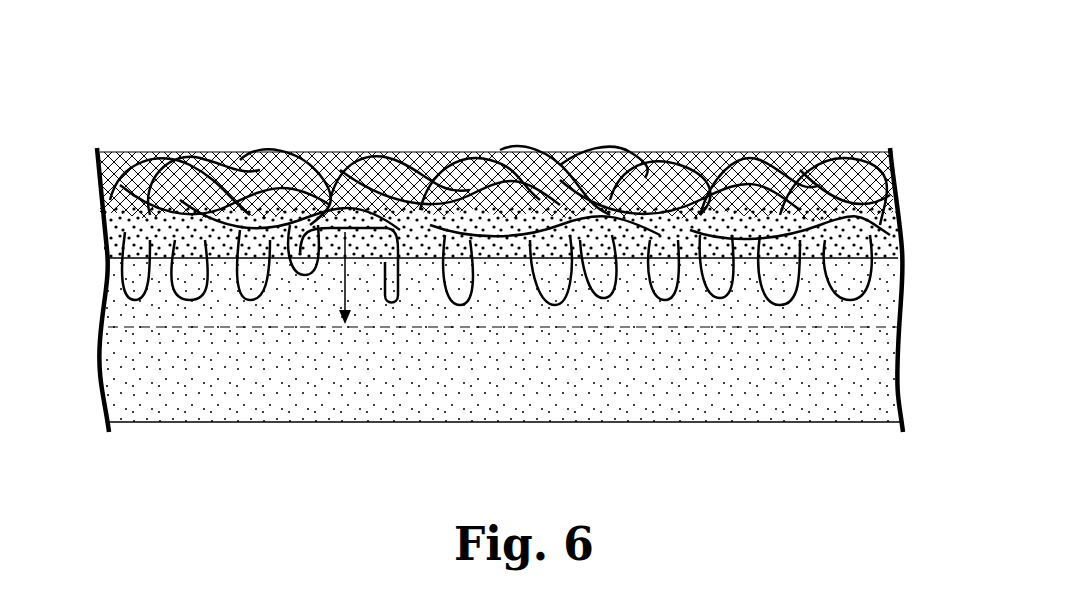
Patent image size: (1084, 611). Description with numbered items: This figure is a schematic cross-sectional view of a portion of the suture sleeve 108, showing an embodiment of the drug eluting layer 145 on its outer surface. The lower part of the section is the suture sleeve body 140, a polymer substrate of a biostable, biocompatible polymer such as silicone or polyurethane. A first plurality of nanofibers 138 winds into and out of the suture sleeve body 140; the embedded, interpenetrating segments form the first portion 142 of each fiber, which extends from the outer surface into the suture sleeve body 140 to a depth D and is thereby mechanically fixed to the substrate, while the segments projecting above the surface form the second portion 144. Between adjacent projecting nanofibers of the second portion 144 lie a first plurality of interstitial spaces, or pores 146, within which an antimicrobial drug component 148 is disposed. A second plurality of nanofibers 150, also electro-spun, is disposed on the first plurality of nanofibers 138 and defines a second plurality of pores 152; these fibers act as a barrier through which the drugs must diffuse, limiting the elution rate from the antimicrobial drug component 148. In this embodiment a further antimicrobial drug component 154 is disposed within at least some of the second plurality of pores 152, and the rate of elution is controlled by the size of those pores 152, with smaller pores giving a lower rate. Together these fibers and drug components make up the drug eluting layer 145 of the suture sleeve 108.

The suture sleeve 108 is at (733, 432).
The first plurality of nanofibers 138 is at (805, 320).
The suture sleeve body 140 is at (604, 316).
The first portion 142 is at (212, 300).
The second portion 144 is at (105, 250).
The drug eluting layer 145 is at (136, 142).
The pores 146 is at (275, 295).
The antimicrobial drug component 148 is at (735, 152).
The second plurality of nanofibers 150 is at (628, 152).
The pores 152 is at (238, 158).
The antimicrobial drug component 154 is at (783, 152).
The depth D is at (306, 300).